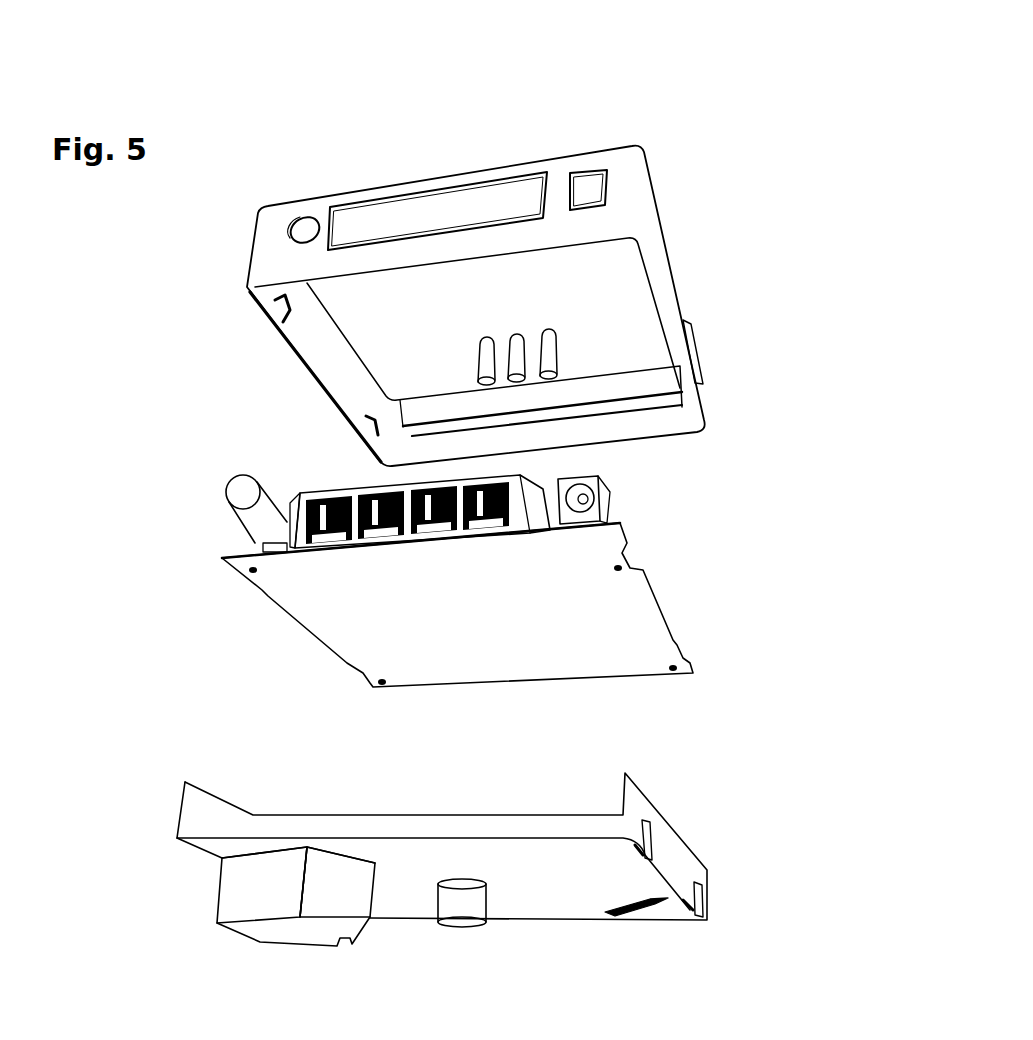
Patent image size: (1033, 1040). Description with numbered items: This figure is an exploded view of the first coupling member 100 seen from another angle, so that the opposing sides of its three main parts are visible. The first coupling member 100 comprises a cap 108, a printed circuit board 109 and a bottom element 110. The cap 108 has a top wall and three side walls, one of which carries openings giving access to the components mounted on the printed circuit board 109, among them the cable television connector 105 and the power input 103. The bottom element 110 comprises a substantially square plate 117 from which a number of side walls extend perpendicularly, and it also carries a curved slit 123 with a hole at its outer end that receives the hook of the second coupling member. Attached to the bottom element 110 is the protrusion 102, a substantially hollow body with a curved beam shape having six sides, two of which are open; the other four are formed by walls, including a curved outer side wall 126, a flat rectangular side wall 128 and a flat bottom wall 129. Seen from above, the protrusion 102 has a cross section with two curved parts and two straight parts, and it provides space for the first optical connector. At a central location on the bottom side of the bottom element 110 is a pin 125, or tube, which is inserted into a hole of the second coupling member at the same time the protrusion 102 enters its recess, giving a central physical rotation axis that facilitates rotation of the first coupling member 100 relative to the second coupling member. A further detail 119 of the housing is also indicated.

The first coupling member 100 is at (606, 108).
The cap 108 is at (688, 292).
The side slot 119 is at (697, 353).
The printed circuit board 109 is at (650, 680).
The cable television connector 105 is at (223, 489).
The power input 103 is at (597, 493).
The plate 117 is at (570, 886).
The protrusion 102 is at (311, 970).
The curved outer side wall 126 is at (228, 893).
The flat rectangular side wall 128 is at (358, 913).
The flat bottom wall 129 is at (260, 933).
The pin 125 is at (488, 920).
The curved slit 123 is at (637, 917).
The bottom element 110 is at (697, 920).